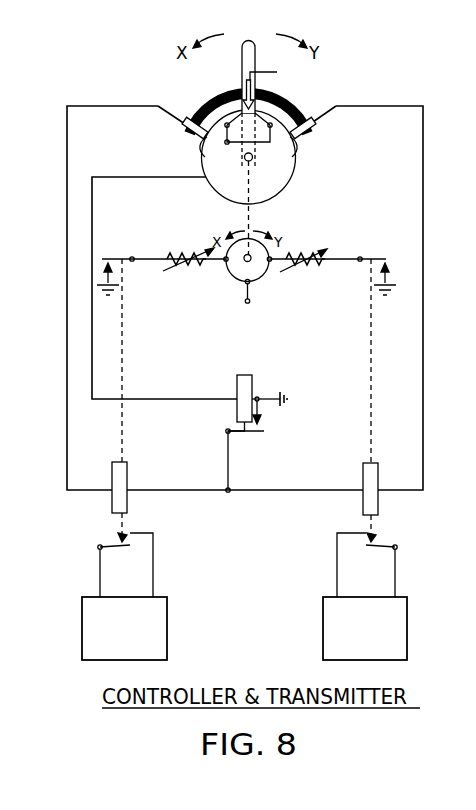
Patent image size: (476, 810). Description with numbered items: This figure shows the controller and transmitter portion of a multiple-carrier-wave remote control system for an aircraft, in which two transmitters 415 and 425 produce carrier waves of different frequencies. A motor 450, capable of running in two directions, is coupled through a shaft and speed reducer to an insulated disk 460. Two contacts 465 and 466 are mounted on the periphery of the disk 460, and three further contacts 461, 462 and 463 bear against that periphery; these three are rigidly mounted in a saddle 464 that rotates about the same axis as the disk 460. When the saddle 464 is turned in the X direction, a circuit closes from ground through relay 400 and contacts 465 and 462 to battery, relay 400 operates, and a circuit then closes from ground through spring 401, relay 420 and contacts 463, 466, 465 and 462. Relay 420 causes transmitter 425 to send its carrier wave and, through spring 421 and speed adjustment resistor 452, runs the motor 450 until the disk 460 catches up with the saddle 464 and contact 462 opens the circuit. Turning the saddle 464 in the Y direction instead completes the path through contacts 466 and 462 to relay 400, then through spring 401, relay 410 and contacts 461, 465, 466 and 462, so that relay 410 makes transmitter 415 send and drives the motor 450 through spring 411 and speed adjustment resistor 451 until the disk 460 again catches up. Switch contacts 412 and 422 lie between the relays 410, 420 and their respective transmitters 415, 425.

The relay 400 is at (251, 378).
The spring 401 is at (264, 431).
The relay 410 is at (125, 475).
The armature 411 is at (112, 259).
The relay switch contact 412 is at (122, 548).
The transmitter 415 is at (146, 643).
The relay 420 is at (365, 473).
The armature 421 is at (380, 246).
The relay switch contact 422 is at (390, 548).
The transmitter 425 is at (386, 643).
The motor 450 is at (250, 282).
The speed adjustment resistor 451 is at (188, 251).
The speed adjustment resistor 452 is at (299, 251).
The insulated disk 460 is at (285, 184).
The contact 461 is at (188, 117).
The contact 462 is at (242, 74).
The contact 463 is at (316, 123).
The saddle 464 is at (285, 98).
The contact 465 is at (203, 156).
The contact 466 is at (294, 156).